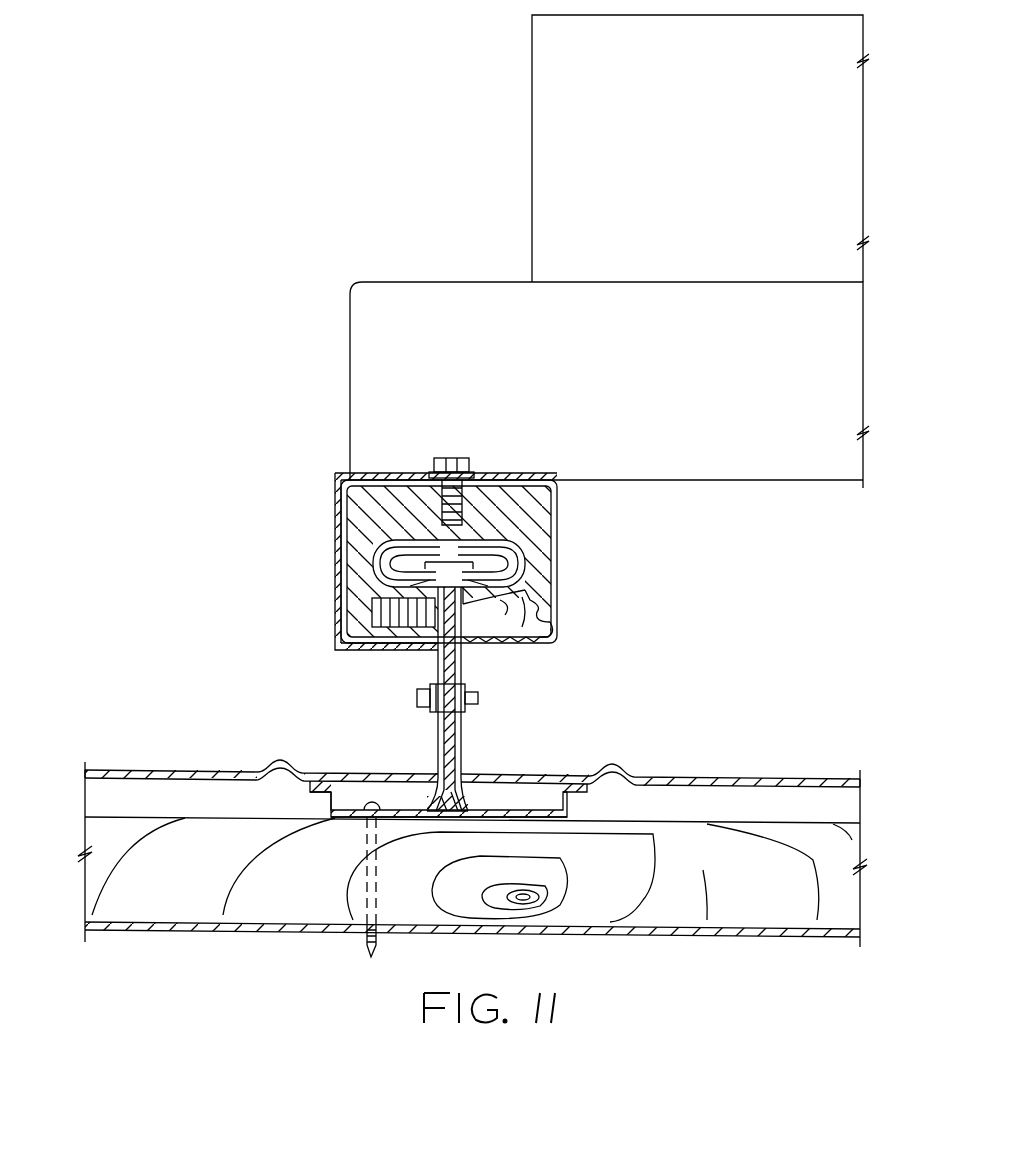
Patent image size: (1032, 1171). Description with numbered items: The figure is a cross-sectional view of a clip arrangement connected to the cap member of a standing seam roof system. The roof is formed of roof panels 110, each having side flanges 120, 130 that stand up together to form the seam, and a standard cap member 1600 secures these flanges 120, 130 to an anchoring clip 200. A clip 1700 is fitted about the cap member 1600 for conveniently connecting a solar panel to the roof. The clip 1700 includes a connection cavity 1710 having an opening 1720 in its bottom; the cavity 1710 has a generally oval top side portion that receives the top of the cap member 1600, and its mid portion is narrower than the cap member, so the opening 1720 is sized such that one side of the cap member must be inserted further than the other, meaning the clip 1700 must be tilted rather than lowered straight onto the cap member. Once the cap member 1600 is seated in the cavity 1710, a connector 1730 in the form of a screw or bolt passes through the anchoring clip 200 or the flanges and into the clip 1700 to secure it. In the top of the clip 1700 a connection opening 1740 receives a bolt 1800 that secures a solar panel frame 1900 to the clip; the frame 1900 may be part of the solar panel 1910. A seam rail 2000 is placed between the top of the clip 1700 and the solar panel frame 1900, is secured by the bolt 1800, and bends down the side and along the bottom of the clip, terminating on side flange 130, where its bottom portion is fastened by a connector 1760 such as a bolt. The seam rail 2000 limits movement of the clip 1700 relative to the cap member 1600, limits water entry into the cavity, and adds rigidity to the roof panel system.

The roof panel 110 is at (192, 772).
The side flange 120 is at (458, 754).
The side flange 130 is at (436, 752).
The anchoring clip 200 is at (458, 742).
The cap member 1600 is at (520, 563).
The clip 1700 is at (565, 512).
The connection cavity 1710 is at (507, 613).
The opening 1720 is at (483, 637).
The connector 1730 is at (525, 590).
The connection opening 1740 is at (460, 500).
The connector 1760 is at (417, 704).
The bolt 1800 is at (452, 458).
The solar panel frame 1900 is at (360, 335).
The solar panel 1910 is at (548, 96).
The seam rail 2000 is at (337, 545).